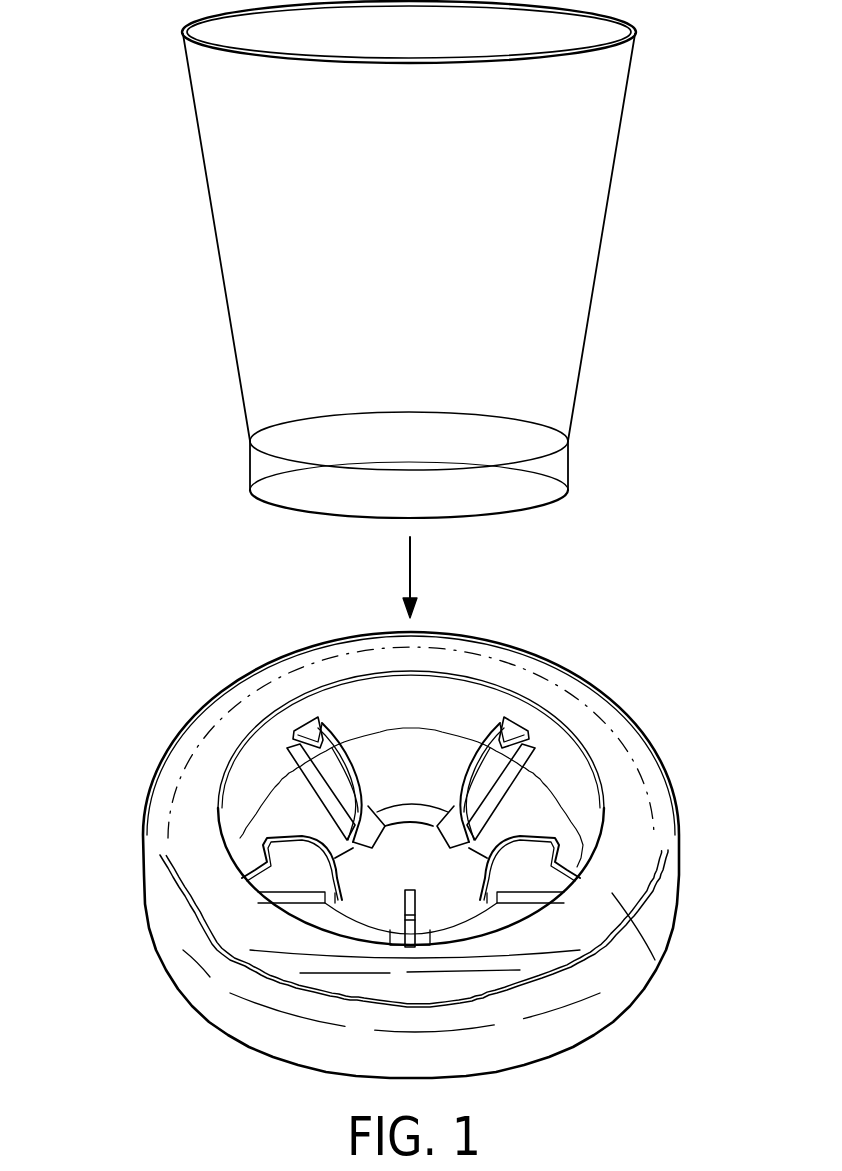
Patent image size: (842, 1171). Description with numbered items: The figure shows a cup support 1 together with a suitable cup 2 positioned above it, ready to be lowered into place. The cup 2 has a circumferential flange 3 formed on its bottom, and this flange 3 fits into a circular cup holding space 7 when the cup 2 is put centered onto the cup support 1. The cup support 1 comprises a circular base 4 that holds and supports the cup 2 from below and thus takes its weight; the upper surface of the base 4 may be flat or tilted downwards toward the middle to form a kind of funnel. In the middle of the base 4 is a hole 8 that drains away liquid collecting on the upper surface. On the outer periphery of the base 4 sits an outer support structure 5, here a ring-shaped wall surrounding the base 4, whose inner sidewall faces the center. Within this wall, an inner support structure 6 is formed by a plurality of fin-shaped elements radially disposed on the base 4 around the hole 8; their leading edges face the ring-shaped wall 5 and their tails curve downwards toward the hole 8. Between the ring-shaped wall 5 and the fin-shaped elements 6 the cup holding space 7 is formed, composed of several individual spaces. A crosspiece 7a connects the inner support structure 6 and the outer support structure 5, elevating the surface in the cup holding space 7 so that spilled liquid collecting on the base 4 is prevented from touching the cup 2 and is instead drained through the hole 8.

The cup support 1 is at (667, 912).
The cup 2 is at (594, 175).
The flange 3 is at (531, 508).
The base 4 is at (525, 808).
The outer support structure 5 is at (235, 962).
The inner support structure 6 is at (563, 853).
The cup holding space 7 is at (245, 858).
The crosspiece 7a is at (235, 800).
The hole 8 is at (427, 883).